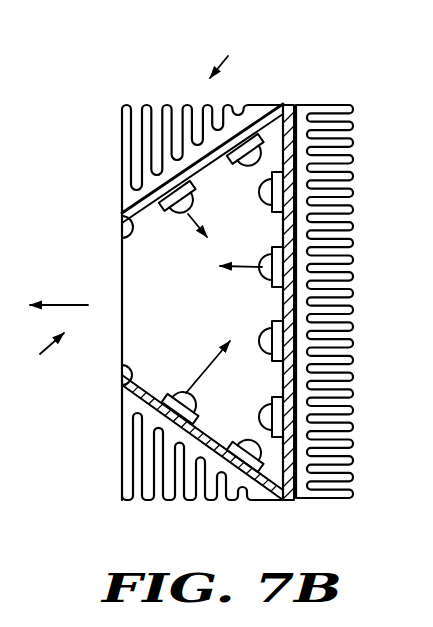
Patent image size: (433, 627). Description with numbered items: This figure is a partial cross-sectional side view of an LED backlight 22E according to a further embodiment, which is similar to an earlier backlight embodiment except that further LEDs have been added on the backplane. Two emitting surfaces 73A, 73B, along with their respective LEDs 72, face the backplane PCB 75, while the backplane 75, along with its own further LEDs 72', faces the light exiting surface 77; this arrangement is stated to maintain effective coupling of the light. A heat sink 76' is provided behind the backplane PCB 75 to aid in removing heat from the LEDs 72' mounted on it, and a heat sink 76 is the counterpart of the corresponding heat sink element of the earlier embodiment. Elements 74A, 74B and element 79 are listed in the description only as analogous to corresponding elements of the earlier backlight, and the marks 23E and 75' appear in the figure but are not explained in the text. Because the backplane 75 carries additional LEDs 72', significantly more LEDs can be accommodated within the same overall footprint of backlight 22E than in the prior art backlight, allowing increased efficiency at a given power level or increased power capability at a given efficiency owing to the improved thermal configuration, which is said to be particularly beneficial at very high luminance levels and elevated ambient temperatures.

The LED backlight 22E is at (237, 52).
The light output direction 23E is at (67, 304).
The LEDs 72 is at (211, 303).
The further LEDs 72' is at (252, 304).
The emitting surface 73A is at (121, 232).
The emitting surface 73B is at (121, 374).
The angled mounting plate 74A is at (121, 213).
The angled mounting plate 74B is at (128, 392).
The backplane PCB 75 is at (261, 302).
The cavity 75' is at (165, 310).
The heat sink 76 is at (202, 282).
The heat sink 76' is at (324, 283).
The light exiting surface 77 is at (37, 355).
The element analogous to element 69 of backlight 22D 79 is at (192, 218).